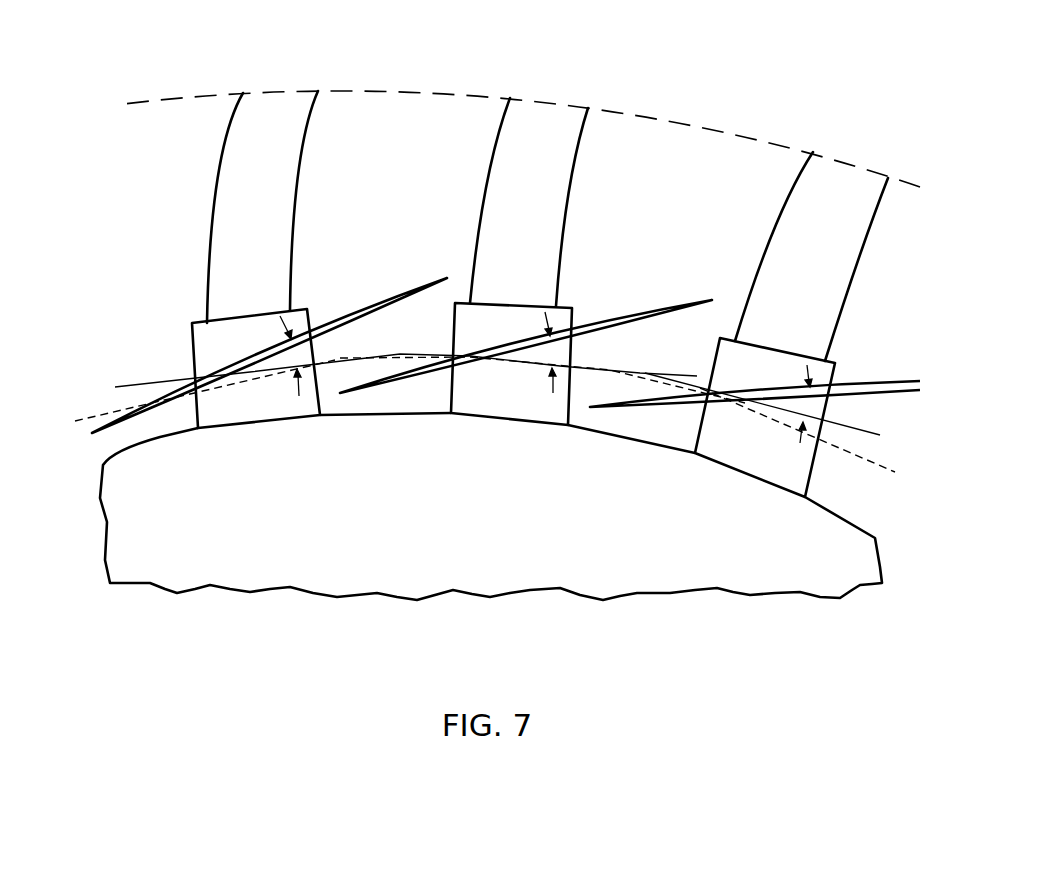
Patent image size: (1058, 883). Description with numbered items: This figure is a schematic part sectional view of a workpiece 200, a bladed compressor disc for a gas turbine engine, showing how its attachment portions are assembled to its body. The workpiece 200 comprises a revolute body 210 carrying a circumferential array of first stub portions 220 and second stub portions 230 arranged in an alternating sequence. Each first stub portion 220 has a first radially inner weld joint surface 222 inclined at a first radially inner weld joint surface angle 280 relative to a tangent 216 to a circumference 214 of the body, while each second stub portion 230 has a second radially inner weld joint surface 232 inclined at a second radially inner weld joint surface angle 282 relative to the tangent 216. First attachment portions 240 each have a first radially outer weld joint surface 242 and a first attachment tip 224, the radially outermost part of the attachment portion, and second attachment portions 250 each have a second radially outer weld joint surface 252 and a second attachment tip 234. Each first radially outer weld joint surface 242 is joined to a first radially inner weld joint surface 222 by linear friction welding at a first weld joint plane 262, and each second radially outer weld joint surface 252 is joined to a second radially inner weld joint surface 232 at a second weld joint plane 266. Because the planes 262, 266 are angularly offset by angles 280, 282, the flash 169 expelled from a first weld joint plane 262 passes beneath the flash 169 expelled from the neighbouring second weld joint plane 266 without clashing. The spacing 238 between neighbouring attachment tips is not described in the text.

The flash 169 is at (397, 300).
The workpiece 200 is at (158, 652).
The revolute body 210 is at (125, 538).
The circumference 214 is at (110, 404).
The tangent 216 is at (142, 385).
The first stub portion 220 is at (228, 426).
The first radially inner weld joint surface 222 is at (273, 348).
The first attachment tip 224 is at (277, 92).
The second stub portion 230 is at (470, 400).
The second radially inner weld joint surface 232 is at (513, 347).
The second attachment tip 234 is at (547, 102).
The gap 238 is at (388, 92).
The first attachment portion 240 is at (190, 347).
The first radially outer weld joint surface 242 is at (218, 367).
The second attachment portion 250 is at (455, 315).
The second radially outer weld joint surface 252 is at (480, 358).
The first weld joint plane 262 is at (205, 318).
The second weld joint plane 266 is at (498, 350).
The first radially inner weld joint surface angle 280 is at (296, 352).
The second radially inner weld joint surface angle 282 is at (560, 362).